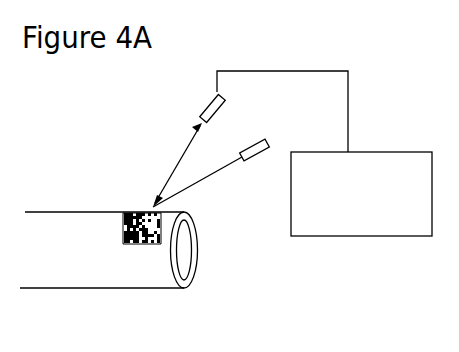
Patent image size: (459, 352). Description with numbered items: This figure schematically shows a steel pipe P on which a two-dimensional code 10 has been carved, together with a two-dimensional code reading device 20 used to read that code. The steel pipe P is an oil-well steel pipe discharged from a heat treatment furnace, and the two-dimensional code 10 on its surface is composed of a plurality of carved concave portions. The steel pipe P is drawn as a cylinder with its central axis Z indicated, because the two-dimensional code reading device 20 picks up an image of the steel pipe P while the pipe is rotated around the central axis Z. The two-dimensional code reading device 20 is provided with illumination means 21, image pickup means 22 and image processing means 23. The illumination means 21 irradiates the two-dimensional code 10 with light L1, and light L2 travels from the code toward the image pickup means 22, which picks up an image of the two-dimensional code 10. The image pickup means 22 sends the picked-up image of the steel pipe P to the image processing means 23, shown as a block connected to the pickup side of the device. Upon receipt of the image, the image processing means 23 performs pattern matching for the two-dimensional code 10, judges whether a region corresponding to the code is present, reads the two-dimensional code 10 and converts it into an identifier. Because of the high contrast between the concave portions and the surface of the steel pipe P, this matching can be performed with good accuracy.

The two-dimensional code 10 is at (146, 245).
The two-dimensional code reading device 20 is at (350, 60).
The illumination means 21 is at (249, 147).
The image pickup means 22 is at (207, 110).
The image processing means 23 is at (379, 151).
The steel pipe P is at (185, 219).
The central axis Z is at (183, 250).
The light L1 is at (197, 182).
The reflected light L2 is at (175, 165).